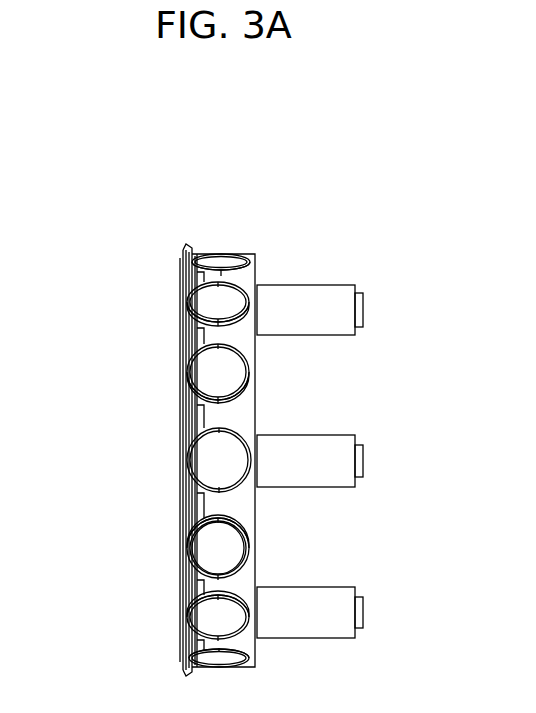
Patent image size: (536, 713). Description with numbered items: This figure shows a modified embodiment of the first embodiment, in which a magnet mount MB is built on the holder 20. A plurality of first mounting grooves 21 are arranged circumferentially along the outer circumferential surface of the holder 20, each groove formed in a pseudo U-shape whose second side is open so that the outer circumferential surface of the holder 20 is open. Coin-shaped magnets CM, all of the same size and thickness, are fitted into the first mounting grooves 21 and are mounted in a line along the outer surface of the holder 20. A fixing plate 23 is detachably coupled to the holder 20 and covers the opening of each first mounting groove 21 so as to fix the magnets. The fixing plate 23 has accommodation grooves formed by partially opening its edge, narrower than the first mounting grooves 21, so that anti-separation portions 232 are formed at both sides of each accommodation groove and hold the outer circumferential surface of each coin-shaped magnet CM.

The mounting board MB is at (122, 195).
The holder 20 is at (242, 503).
The first mounting groove 21 is at (240, 433).
The fixing plate 23 is at (180, 512).
The anti-separation portion 232 is at (188, 403).
The coin-shaped magnet CM is at (203, 557).